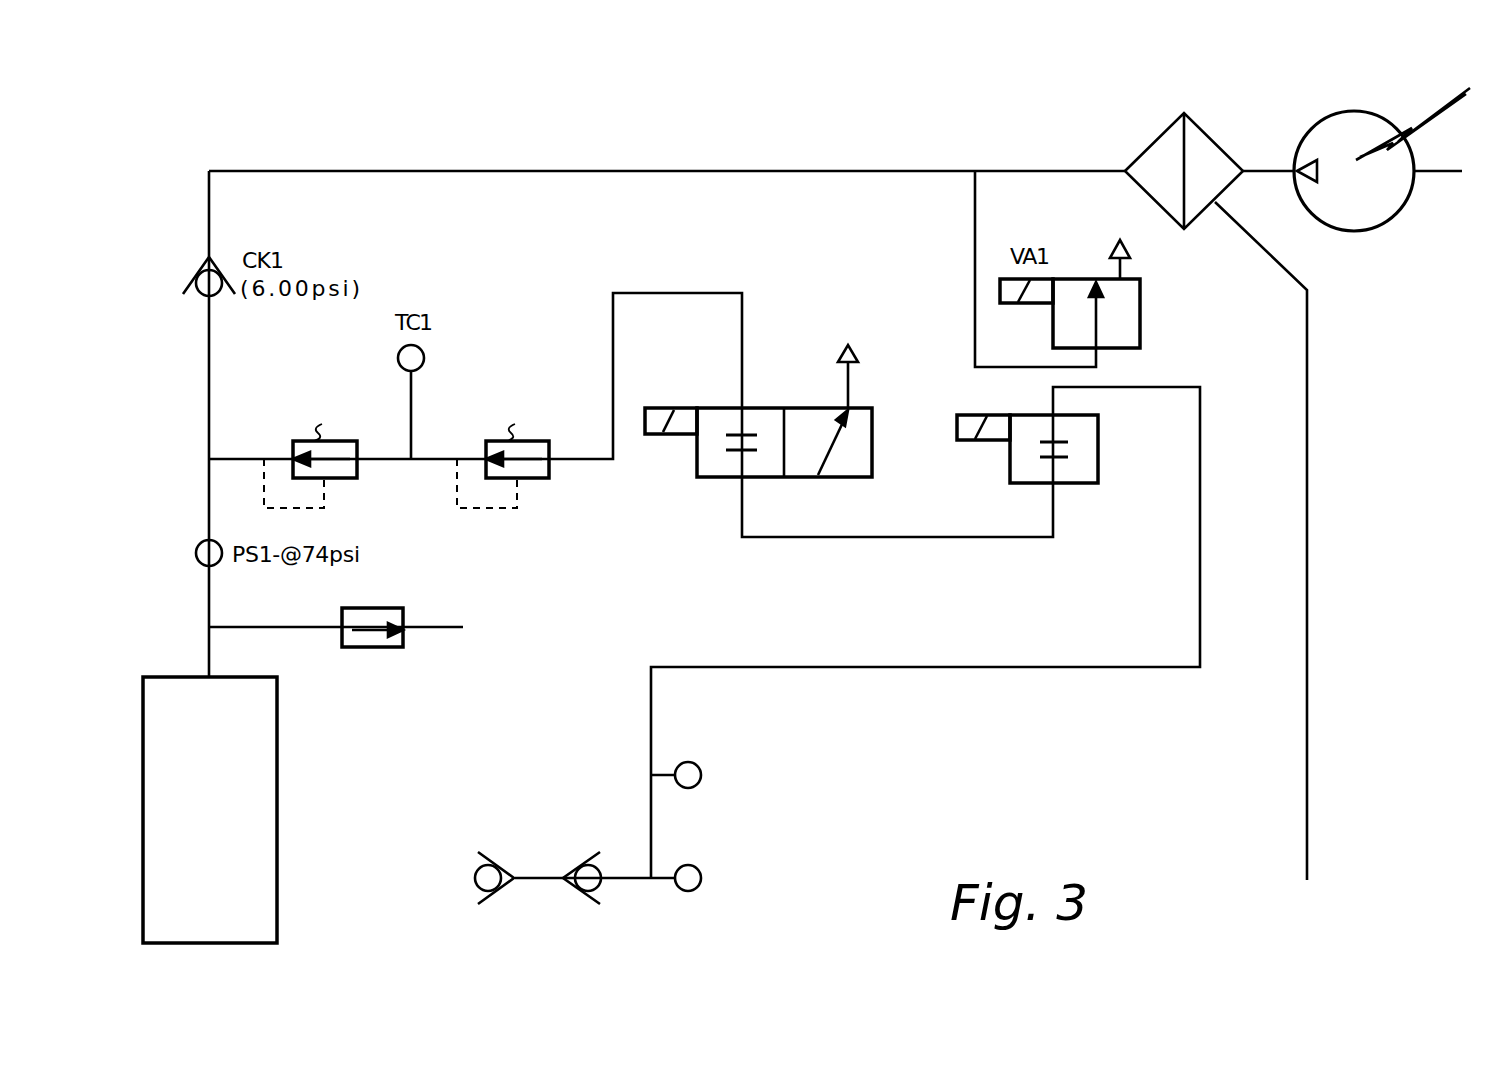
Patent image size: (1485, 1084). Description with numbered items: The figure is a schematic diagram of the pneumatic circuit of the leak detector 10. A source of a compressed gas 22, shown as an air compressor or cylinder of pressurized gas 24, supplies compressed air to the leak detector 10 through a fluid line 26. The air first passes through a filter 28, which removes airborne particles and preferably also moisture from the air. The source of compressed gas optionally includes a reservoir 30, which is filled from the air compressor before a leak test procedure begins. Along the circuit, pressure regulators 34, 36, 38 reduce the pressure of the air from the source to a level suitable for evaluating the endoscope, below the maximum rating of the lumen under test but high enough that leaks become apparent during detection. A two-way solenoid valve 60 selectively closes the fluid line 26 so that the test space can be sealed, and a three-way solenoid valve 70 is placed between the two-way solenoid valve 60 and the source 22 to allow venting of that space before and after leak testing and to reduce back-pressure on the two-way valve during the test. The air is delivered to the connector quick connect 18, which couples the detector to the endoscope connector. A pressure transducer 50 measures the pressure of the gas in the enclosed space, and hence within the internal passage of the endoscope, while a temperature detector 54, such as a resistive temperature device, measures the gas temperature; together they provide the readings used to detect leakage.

The leak detector 10 is at (850, 146).
The fluid line 26 is at (660, 171).
The filter 28 is at (1155, 140).
The source of a compressed gas 22 is at (1296, 118).
The air compressor or cylinder of pressurized gas 24 is at (1392, 222).
The three-way solenoid valve 70 is at (872, 440).
The two-way solenoid valve 60 is at (1082, 483).
The pressure regulator 36 is at (340, 478).
The pressure regulator 38 is at (537, 478).
The pressure regulator 34 is at (375, 608).
The reservoir 30 is at (277, 842).
The pressure transducer 50 is at (698, 765).
The temperature detector 54 is at (698, 868).
The connector quick connect 18 is at (540, 879).